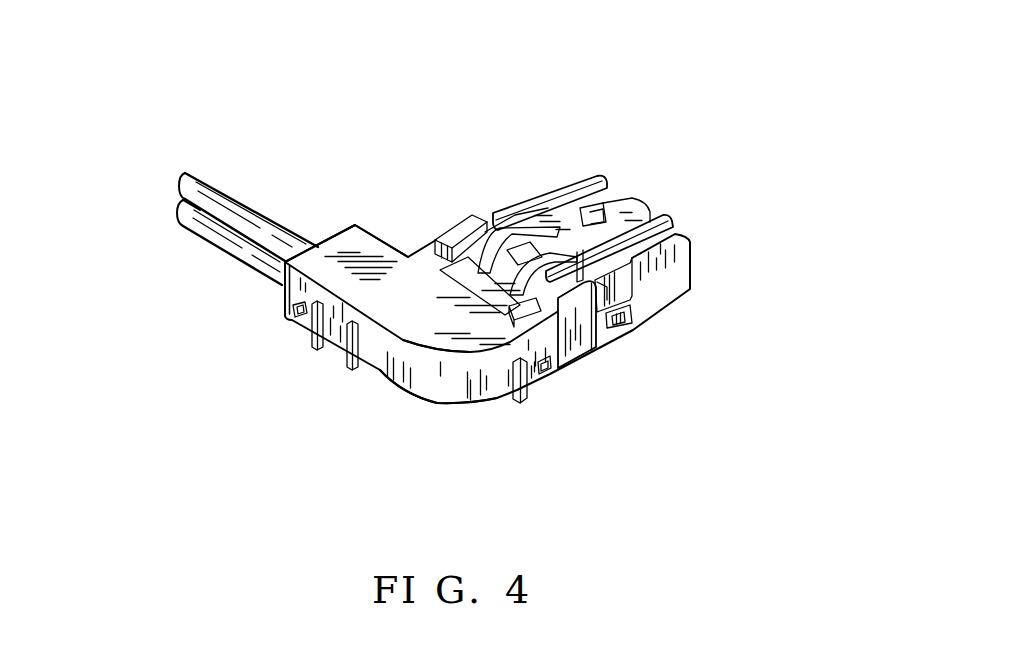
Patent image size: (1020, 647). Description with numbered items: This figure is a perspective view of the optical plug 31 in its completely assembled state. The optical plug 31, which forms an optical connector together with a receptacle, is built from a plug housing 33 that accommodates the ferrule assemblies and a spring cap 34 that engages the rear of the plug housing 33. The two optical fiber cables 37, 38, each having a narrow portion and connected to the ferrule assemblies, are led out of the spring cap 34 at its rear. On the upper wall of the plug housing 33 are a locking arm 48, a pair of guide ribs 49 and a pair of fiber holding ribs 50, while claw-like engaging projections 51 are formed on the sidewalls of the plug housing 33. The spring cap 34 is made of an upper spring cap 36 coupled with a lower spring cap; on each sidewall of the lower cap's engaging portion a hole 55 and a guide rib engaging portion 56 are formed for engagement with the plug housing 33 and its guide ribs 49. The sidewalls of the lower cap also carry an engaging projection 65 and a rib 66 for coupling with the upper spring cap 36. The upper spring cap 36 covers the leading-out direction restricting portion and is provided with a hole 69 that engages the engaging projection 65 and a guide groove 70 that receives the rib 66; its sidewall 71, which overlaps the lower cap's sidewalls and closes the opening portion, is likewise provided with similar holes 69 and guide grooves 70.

The optical plug 31 is at (584, 122).
The plug housing 33 is at (694, 268).
The spring cap 34 is at (433, 417).
The upper spring cap 36 is at (372, 227).
The optical fiber cable 37 is at (198, 233).
The optical fiber cable 38 is at (210, 188).
The locking arm 48 is at (625, 202).
The guide rib 49 is at (502, 204).
The fiber holding rib 50 is at (472, 292).
The engaging projection 51 is at (620, 330).
The hole 55 is at (633, 318).
The guide rib engaging portion 56 is at (462, 233).
The engaging projection 65 is at (288, 319).
The rib 66 is at (315, 352).
The hole 69 is at (293, 307).
The guide groove 70 is at (336, 336).
The sidewall 71 is at (410, 380).